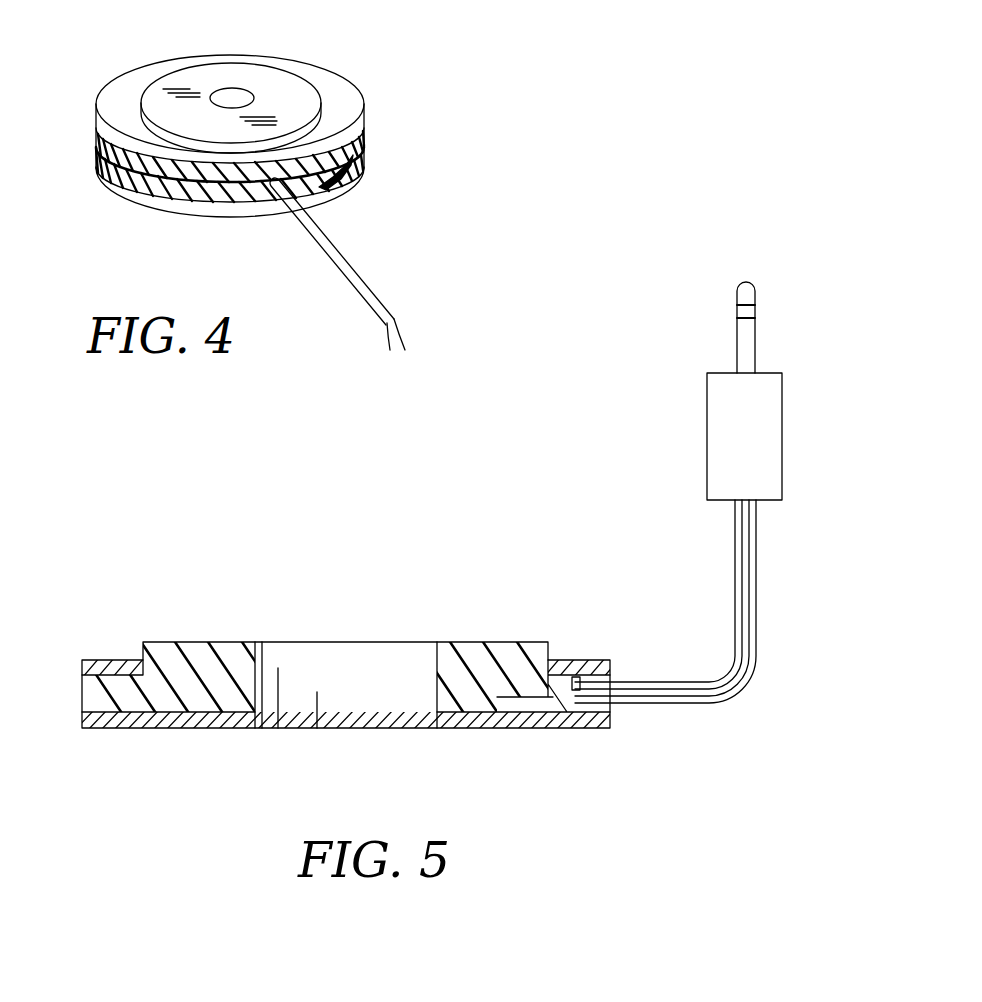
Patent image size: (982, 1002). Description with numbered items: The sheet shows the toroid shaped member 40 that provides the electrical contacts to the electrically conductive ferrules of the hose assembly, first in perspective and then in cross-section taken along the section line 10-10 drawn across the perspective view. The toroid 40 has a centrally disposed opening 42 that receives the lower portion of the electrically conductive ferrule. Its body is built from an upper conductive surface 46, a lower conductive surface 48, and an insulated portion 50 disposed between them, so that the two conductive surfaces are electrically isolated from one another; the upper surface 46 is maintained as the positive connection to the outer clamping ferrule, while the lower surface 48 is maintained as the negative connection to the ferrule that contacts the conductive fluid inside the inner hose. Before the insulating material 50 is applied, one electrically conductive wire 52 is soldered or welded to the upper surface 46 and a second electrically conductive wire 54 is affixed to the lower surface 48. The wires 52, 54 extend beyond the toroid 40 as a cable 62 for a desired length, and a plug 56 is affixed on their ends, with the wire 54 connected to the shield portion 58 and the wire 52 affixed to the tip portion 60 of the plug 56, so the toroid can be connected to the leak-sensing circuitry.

In FIG. 4, the section line 10 is at (215, 40).
In FIG. 4, the toroid shaped member 40 is at (327, 58).
In FIG. 5, the toroid shaped member 40 is at (230, 618).
In FIG. 4, the centrally disposed opening 42 is at (238, 95).
In FIG. 5, the centrally disposed opening 42 is at (433, 652).
In FIG. 4, the upper conductive surface 46 is at (348, 107).
In FIG. 5, the upper conductive surface 46 is at (587, 660).
In FIG. 4, the lower conductive surface 48 is at (358, 172).
In FIG. 5, the lower conductive surface 48 is at (583, 728).
In FIG. 4, the insulated portion 50 is at (96, 142).
In FIG. 5, the insulated portion 50 is at (82, 697).
In FIG. 4, the electrically conductive wire 52 is at (388, 338).
In FIG. 5, the electrically conductive wire 52 is at (560, 665).
In FIG. 4, the second electrically conductive wire 54 is at (400, 334).
In FIG. 5, the second electrically conductive wire 54 is at (748, 578).
In FIG. 5, the plug 56 is at (745, 418).
In FIG. 5, the shield portion 58 is at (745, 343).
In FIG. 5, the tip portion 60 is at (744, 291).
In FIG. 4, the cable 62 is at (348, 266).
In FIG. 5, the cable 62 is at (757, 656).